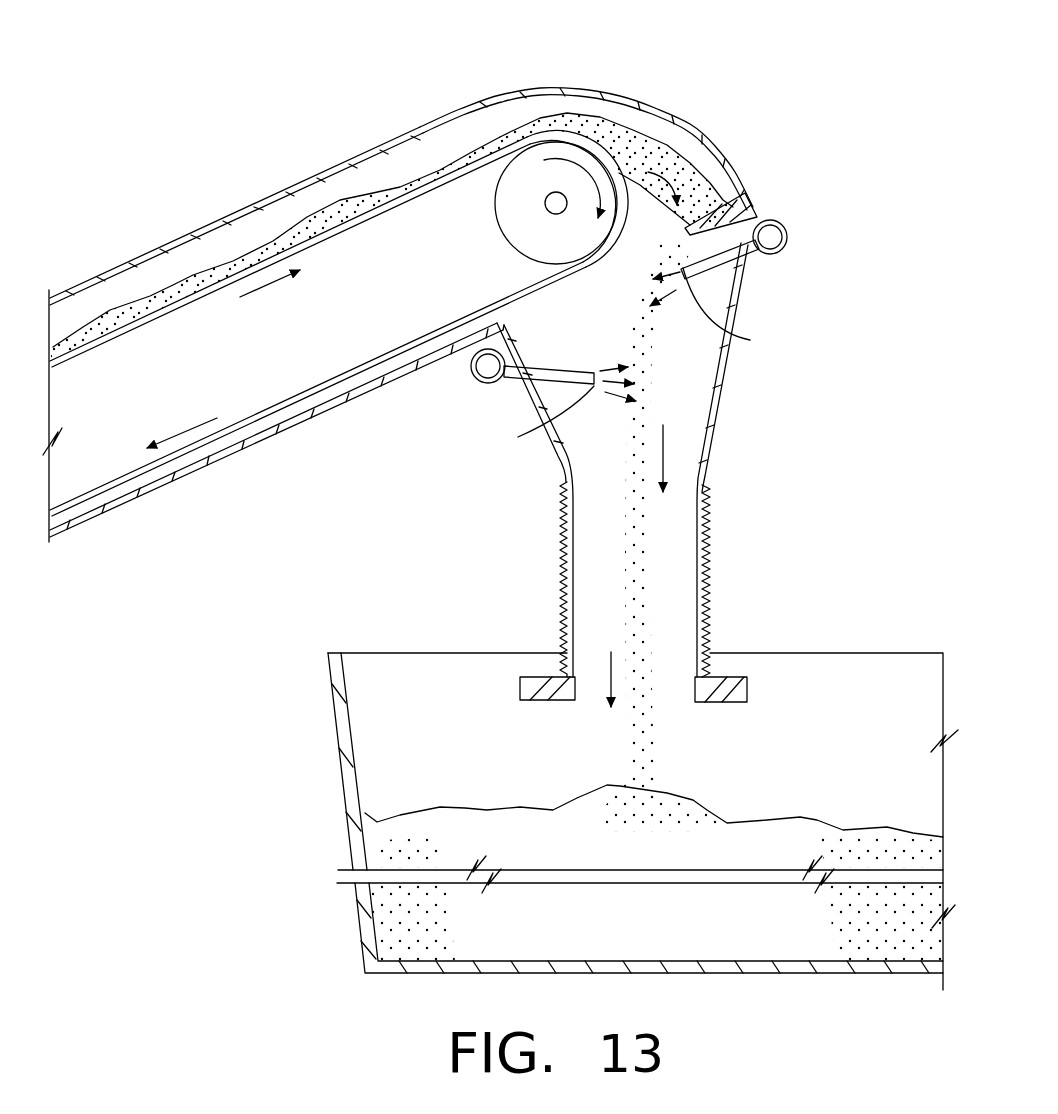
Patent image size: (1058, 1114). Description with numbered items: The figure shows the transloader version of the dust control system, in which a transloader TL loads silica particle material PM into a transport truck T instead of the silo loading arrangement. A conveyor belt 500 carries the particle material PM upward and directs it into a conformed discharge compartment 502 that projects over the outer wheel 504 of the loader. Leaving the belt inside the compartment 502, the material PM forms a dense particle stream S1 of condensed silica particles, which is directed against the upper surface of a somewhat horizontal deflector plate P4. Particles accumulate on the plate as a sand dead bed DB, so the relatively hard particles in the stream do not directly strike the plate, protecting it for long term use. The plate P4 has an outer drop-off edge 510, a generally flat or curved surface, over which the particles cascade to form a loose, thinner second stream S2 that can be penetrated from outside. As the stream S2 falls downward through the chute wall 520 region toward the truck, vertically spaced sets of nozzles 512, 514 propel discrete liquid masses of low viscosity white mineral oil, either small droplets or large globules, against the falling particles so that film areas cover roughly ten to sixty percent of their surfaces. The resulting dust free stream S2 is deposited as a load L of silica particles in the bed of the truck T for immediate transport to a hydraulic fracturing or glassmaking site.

The conveyor belt 500 is at (168, 307).
The particle material PM is at (240, 262).
The transloader TL is at (303, 173).
The outer wheel 504 is at (538, 157).
The dense particle stream S1 is at (605, 127).
The conformed discharge compartment 502 is at (632, 117).
The sand dead bed DB is at (740, 213).
The deflector plate P4 is at (787, 216).
The drop-off edge 510 is at (715, 280).
The nozzle set 512 is at (750, 340).
The downwardly falling stream S2 is at (643, 410).
The chute wall 520 is at (707, 463).
The nozzle set 514 is at (518, 437).
The truck T is at (328, 690).
The load L is at (810, 830).